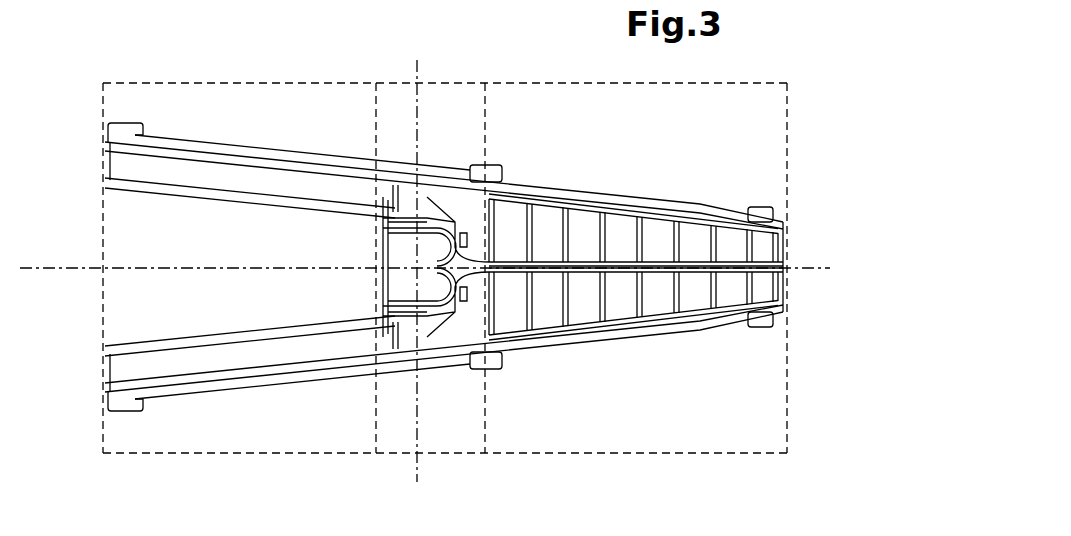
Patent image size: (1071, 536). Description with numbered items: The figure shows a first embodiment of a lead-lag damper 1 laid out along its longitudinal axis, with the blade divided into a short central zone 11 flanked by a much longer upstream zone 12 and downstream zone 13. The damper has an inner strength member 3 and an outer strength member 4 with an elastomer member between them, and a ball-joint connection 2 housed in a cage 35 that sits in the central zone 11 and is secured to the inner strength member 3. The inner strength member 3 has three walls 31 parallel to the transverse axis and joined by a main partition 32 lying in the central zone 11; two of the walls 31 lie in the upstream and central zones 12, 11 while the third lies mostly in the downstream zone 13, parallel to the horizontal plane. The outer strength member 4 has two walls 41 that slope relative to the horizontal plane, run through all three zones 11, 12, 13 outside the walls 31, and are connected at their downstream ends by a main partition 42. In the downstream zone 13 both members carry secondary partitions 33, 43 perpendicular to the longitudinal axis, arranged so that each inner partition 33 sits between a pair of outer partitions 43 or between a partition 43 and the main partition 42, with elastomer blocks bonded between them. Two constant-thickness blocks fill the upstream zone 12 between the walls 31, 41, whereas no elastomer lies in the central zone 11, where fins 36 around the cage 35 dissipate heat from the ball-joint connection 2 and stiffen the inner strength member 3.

The lead-lag damper 1 is at (64, 438).
The ball-joint connection 2 is at (338, 217).
The inner strength member 3 is at (130, 250).
The outer strength member 4 is at (183, 116).
The central zone 11 is at (450, 455).
The upstream zone 12 is at (160, 455).
The downstream zone 13 is at (651, 455).
The walls 31 is at (150, 190).
The main partition 32 is at (528, 183).
The secondary partitions 33 is at (503, 207).
The cage 35 is at (370, 281).
The fins 36 is at (412, 190).
The walls 41 is at (247, 147).
The main partition 42 is at (783, 258).
The secondary partitions 43 is at (560, 210).